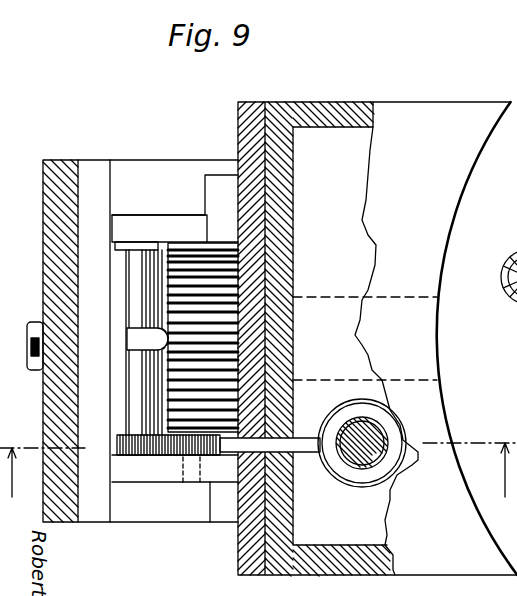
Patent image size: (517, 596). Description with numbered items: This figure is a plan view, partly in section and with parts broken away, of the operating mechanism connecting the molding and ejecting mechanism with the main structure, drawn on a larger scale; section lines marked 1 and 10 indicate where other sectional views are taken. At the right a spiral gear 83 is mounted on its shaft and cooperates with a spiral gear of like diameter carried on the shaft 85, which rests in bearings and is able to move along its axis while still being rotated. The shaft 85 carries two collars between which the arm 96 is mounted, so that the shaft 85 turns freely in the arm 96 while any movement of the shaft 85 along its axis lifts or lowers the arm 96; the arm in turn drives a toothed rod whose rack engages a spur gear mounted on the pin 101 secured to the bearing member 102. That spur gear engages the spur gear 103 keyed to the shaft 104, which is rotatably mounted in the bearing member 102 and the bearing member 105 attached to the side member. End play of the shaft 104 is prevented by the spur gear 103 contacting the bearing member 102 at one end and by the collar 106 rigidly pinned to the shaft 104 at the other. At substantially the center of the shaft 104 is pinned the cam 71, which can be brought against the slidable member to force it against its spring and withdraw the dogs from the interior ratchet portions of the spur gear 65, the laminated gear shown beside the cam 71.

The machine axis / section line 1 is at (470, 480).
The section line 10 is at (42, 486).
The spur gear 65 is at (226, 232).
The cam 71 is at (163, 343).
The spiral gear 83 is at (507, 303).
The shaft 85 is at (353, 437).
The arm 96 is at (303, 443).
The pin 101 is at (190, 468).
The bearing member 102 is at (218, 488).
The spur gear 103 is at (135, 455).
The shaft 104 is at (135, 400).
The bearing member 105 is at (217, 193).
The collar 106 is at (138, 243).